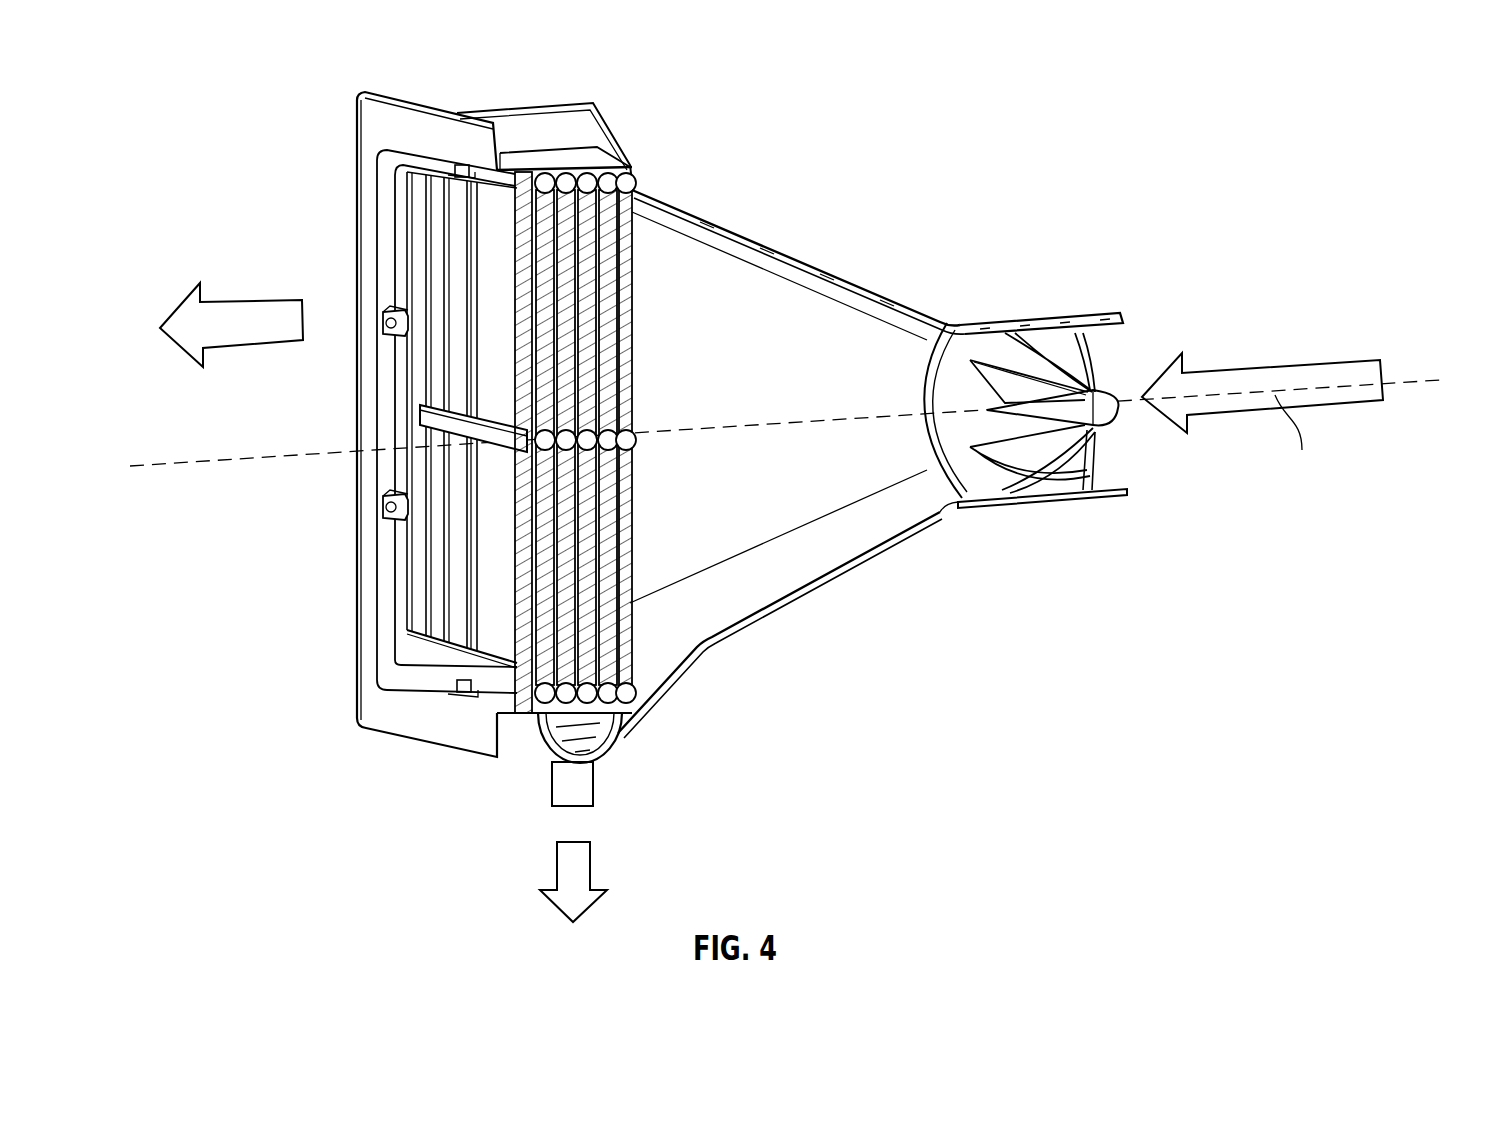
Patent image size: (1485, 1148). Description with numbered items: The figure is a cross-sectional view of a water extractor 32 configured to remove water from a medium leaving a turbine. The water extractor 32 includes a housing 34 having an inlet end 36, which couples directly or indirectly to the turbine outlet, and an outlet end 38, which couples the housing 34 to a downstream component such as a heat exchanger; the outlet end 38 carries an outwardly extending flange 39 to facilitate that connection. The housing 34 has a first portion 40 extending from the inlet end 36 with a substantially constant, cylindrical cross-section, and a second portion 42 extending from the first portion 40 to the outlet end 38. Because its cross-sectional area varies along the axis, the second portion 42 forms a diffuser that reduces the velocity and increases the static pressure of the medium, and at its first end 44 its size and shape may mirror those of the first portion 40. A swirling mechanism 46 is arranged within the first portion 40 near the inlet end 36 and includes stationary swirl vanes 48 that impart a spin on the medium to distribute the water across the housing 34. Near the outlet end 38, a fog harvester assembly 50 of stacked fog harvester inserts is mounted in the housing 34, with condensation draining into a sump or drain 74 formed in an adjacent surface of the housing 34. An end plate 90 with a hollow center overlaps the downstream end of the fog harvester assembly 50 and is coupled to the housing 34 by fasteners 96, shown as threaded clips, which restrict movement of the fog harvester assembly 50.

The water extractor 32 is at (228, 70).
The housing 34 is at (924, 298).
The inlet end 36 is at (1107, 490).
The outlet end 38 is at (410, 568).
The outwardly extending flange 39 is at (365, 222).
The first portion 40 is at (1049, 292).
The second portion 42 is at (766, 240).
The first end 44 is at (942, 500).
The swirling mechanism 46 is at (1082, 378).
The stationary swirl vanes 48 is at (1013, 383).
The fog harvester assembly 50 is at (565, 170).
The sump or drain 74 is at (560, 768).
The end plate 90 is at (402, 400).
The fasteners (clips) 96 is at (455, 162).